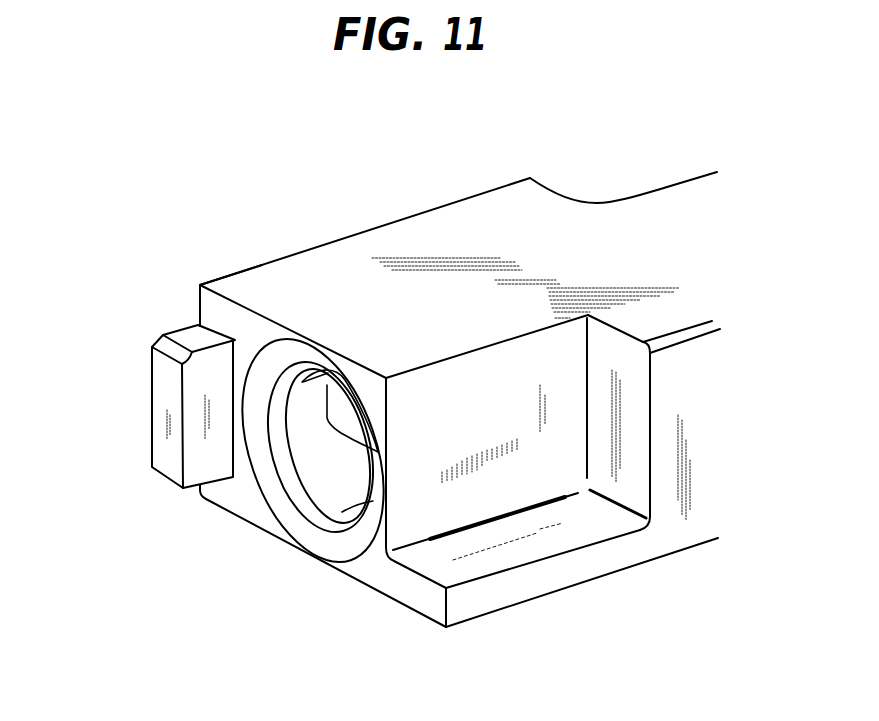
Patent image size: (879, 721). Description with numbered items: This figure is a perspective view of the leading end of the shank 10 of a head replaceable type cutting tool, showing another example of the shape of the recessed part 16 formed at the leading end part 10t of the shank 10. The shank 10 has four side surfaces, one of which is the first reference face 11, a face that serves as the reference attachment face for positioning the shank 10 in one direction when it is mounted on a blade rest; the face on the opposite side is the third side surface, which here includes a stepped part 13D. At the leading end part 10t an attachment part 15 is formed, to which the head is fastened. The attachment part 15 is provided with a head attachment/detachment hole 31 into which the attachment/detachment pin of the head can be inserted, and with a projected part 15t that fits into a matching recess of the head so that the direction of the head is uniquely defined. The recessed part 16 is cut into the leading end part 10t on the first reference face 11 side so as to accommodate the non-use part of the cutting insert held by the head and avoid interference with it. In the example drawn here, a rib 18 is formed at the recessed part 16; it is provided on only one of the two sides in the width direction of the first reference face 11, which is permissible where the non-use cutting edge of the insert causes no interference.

The shank 10 is at (667, 218).
The leading end part 10t is at (244, 258).
The stepped part 13D is at (540, 170).
The recessed part 16 is at (507, 424).
The first reference face 11 is at (673, 520).
The rib 18 is at (512, 553).
The head attachment/detachment hole 31 is at (328, 472).
The attachment part 15 is at (218, 533).
The projected part 15t is at (168, 422).